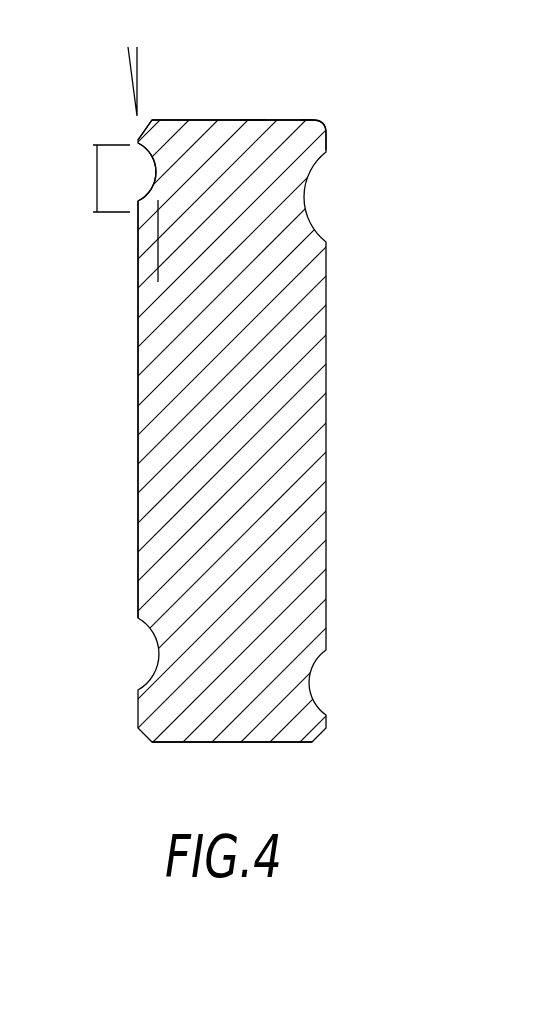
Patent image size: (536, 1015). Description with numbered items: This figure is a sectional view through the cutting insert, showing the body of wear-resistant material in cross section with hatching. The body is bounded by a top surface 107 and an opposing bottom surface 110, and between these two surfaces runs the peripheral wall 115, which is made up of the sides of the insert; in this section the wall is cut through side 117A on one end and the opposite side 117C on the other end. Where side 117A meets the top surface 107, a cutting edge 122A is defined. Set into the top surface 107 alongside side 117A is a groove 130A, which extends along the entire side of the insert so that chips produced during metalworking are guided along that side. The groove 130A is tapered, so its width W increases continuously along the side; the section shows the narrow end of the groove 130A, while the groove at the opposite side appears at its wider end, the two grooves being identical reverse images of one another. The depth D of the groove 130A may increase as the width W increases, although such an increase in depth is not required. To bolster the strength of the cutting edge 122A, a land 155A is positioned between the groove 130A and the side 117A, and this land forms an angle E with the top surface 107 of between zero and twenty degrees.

The bottom surface 110 is at (327, 525).
The top surface 107 is at (138, 372).
The side 117A is at (243, 120).
The cutting edge 122A is at (265, 120).
The peripheral wall 115 is at (297, 120).
The land 155A is at (139, 145).
The groove 130A is at (147, 203).
The side 117C is at (230, 743).
The angle E is at (103, 75).
The width W is at (97, 145).
The depth D is at (159, 275).